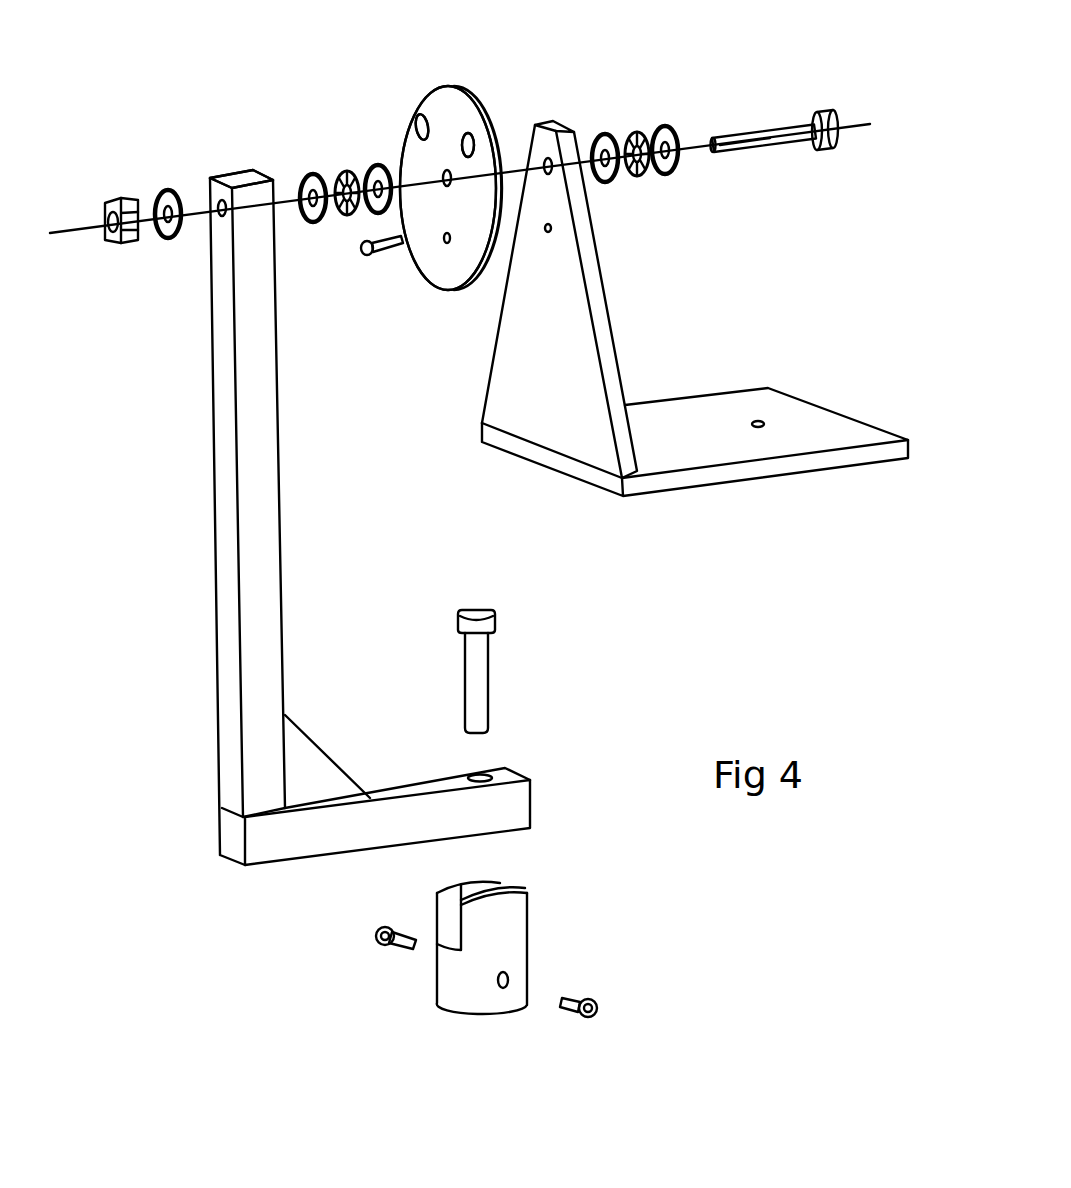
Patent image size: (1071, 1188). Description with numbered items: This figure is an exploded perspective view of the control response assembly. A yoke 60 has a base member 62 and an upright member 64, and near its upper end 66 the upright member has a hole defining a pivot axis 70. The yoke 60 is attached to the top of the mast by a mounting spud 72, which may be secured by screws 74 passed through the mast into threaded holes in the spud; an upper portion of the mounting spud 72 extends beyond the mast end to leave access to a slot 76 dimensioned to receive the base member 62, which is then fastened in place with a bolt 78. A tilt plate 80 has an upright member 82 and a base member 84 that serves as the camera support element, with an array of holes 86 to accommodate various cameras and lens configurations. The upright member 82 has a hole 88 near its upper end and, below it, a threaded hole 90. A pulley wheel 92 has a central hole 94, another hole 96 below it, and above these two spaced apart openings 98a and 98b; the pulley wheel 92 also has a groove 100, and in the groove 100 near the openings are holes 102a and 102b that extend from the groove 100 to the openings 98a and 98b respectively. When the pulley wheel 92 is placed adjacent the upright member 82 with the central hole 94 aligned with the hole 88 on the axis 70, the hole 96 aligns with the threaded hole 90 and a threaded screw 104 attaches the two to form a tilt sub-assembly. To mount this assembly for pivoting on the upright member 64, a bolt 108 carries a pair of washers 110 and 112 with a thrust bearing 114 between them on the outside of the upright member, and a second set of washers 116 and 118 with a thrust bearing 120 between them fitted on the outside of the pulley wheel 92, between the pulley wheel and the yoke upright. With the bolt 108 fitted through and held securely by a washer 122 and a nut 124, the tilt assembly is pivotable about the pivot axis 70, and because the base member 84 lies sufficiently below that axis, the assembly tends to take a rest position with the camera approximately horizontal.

The yoke 60 is at (335, 547).
The base member 62 is at (262, 870).
The upright member 64 is at (213, 645).
The upper end 66 is at (210, 255).
The pivot axis 70 is at (850, 128).
The mounting spud 72 is at (471, 948).
The screws 74 is at (380, 940).
The slot 76 is at (448, 914).
The bolt 78 is at (490, 668).
The tilt plate 80 is at (673, 300).
The upright member 82 is at (487, 365).
The base member 84 is at (830, 470).
The holes 86 is at (765, 423).
The hole 88 is at (550, 118).
The threaded hole 90 is at (551, 227).
The pulley wheel 92 is at (460, 292).
The central hole 94 is at (447, 88).
The hole 96 is at (441, 245).
The opening 98a is at (416, 106).
The opening 98b is at (472, 130).
The groove 100 is at (493, 278).
The hole 102a is at (412, 103).
The hole 102b is at (465, 150).
The threaded screw 104 is at (366, 253).
The bolt 108 is at (826, 112).
The washer 110 is at (680, 125).
The washer 112 is at (607, 130).
The thrust bearing 114 is at (640, 130).
The washer 116 is at (378, 165).
The washer 118 is at (310, 173).
The thrust bearing 120 is at (343, 170).
The washer 122 is at (164, 188).
The nut 124 is at (110, 200).